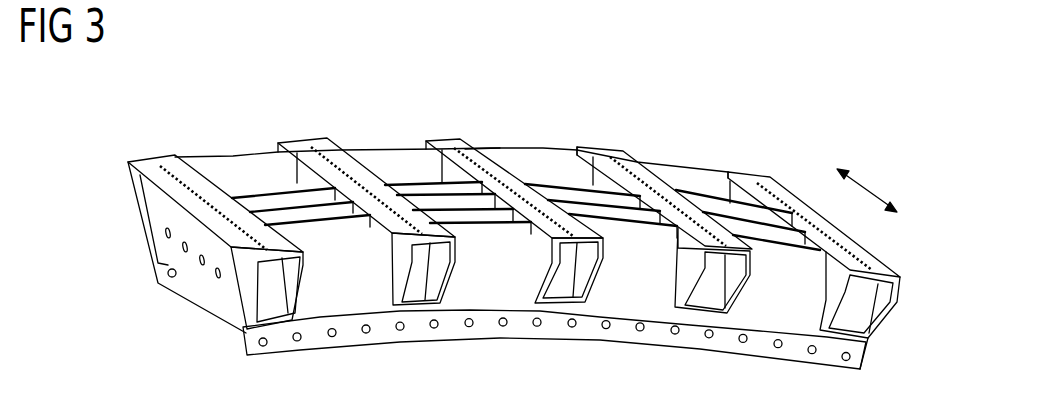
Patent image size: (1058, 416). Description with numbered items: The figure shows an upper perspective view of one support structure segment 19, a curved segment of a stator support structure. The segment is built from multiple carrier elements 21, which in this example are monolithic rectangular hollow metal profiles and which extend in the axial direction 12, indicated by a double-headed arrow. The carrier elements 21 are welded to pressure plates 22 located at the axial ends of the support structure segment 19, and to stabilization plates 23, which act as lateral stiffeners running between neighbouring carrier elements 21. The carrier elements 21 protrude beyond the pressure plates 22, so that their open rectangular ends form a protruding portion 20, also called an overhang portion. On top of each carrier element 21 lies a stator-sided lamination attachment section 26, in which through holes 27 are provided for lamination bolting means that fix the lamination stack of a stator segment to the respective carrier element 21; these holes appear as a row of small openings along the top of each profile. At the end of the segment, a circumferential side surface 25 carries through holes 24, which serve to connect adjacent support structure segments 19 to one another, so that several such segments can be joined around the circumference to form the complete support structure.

The axial direction 12 is at (866, 186).
The support structure segment 19 is at (122, 248).
The protruding portion 20 is at (832, 298).
The carrier element 21 is at (170, 158).
The pressure plate 22 is at (376, 167).
The stabilization plate 23 is at (565, 167).
The through hole 24 is at (218, 273).
The circumferential side surface 25 is at (165, 210).
The stator-sided lamination attachment section 26 is at (443, 143).
The through hole 27 is at (480, 157).